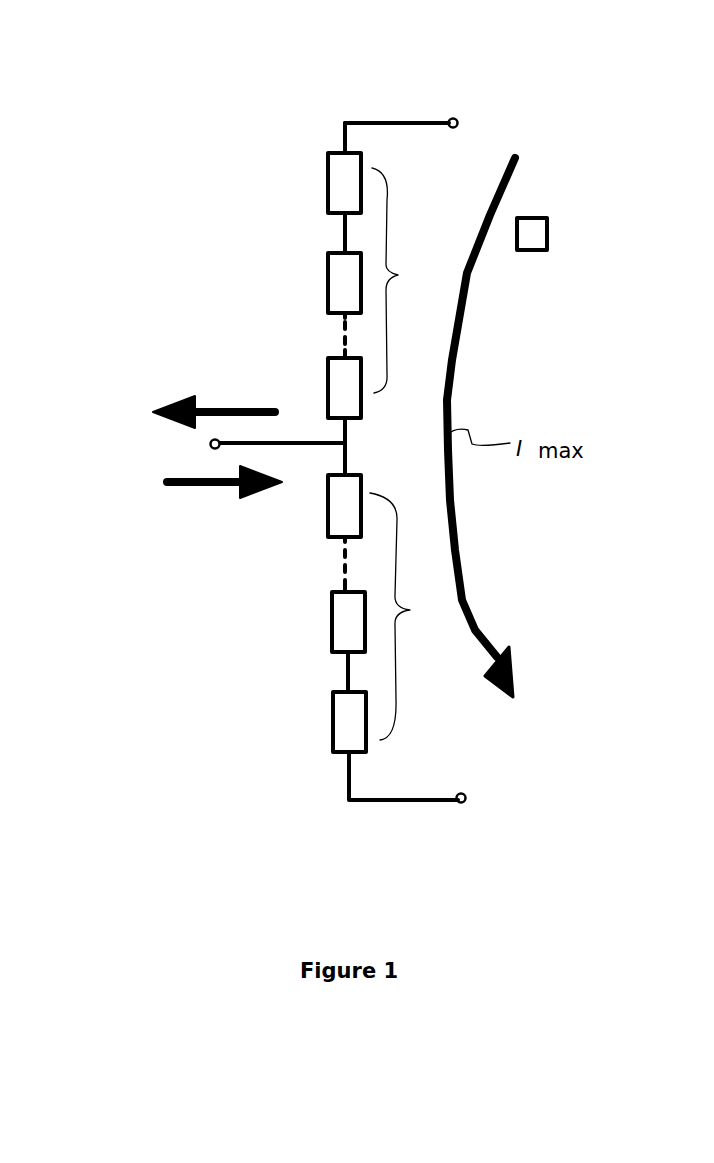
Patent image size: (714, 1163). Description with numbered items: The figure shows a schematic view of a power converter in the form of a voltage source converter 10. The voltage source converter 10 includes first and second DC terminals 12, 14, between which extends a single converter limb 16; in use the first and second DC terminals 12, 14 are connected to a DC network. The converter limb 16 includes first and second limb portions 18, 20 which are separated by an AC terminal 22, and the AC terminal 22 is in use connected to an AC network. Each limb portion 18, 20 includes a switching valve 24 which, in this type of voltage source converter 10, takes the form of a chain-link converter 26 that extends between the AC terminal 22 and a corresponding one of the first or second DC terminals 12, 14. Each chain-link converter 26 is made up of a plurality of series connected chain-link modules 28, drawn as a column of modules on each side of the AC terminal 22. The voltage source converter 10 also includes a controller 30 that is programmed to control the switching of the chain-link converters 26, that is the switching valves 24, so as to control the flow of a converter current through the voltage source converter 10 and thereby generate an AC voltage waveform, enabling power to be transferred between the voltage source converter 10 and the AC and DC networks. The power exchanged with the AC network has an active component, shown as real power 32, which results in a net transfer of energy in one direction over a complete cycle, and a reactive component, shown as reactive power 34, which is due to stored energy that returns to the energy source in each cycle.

The voltage source converter 10 is at (150, 128).
The first DC terminal 12 is at (457, 118).
The second DC terminal 14 is at (464, 803).
The converter limb 16 is at (346, 106).
The first limb portion 18 is at (230, 258).
The second limb portion 20 is at (219, 621).
The AC terminal 22 is at (209, 445).
The switching valve 24 is at (398, 275).
The chain-link converter 26 is at (410, 608).
The chain-link module 28 is at (340, 190).
The controller 30 is at (535, 236).
The real power 32 is at (206, 404).
The reactive power 34 is at (200, 490).